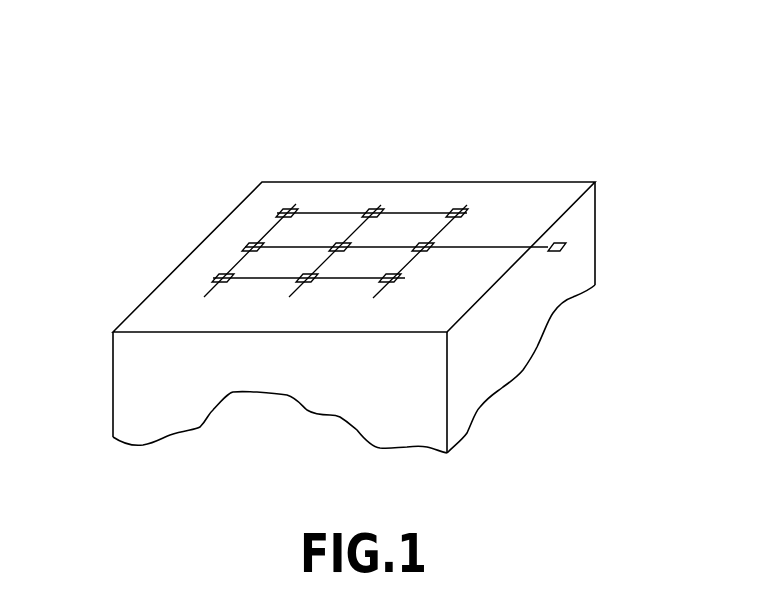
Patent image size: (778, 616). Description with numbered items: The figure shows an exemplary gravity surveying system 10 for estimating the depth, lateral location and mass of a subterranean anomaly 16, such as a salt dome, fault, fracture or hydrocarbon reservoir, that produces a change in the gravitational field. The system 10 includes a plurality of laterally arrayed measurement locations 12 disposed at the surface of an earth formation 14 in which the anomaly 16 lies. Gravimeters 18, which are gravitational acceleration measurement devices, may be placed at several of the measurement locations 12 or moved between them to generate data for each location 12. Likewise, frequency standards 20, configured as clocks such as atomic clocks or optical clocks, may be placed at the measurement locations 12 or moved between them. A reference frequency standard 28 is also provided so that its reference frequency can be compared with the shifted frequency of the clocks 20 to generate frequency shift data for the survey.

The gravity surveying system 10 is at (138, 125).
The measurement location 12 is at (288, 209).
The earth formation 14 is at (420, 380).
The subterranean anomaly 16 is at (265, 417).
The gravimeter 18 is at (221, 277).
The frequency standard 20 is at (225, 282).
The reference frequency standard 28 is at (566, 246).